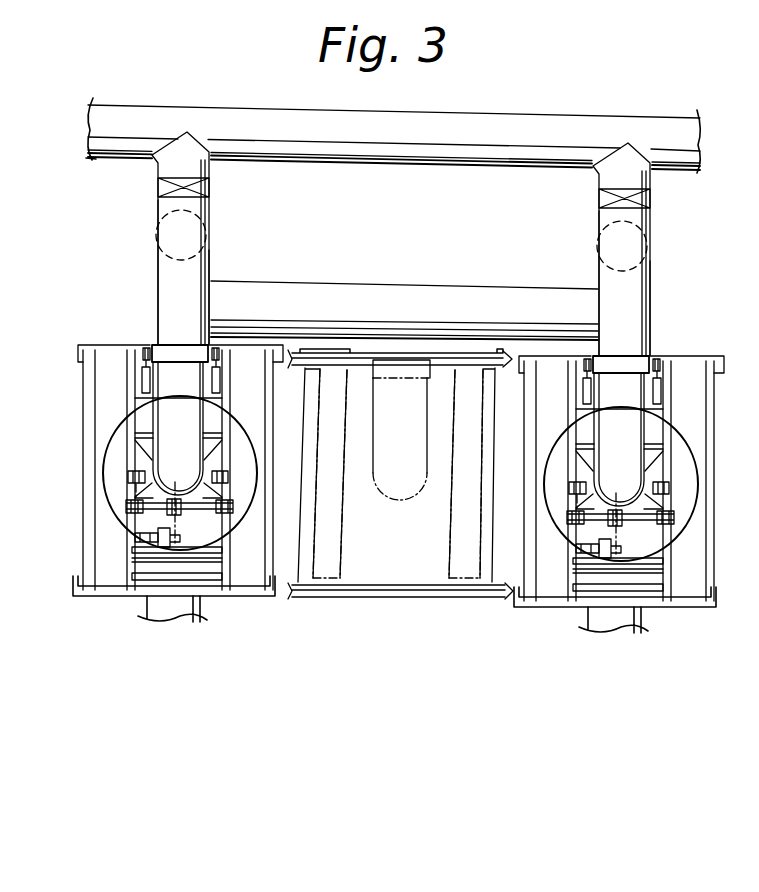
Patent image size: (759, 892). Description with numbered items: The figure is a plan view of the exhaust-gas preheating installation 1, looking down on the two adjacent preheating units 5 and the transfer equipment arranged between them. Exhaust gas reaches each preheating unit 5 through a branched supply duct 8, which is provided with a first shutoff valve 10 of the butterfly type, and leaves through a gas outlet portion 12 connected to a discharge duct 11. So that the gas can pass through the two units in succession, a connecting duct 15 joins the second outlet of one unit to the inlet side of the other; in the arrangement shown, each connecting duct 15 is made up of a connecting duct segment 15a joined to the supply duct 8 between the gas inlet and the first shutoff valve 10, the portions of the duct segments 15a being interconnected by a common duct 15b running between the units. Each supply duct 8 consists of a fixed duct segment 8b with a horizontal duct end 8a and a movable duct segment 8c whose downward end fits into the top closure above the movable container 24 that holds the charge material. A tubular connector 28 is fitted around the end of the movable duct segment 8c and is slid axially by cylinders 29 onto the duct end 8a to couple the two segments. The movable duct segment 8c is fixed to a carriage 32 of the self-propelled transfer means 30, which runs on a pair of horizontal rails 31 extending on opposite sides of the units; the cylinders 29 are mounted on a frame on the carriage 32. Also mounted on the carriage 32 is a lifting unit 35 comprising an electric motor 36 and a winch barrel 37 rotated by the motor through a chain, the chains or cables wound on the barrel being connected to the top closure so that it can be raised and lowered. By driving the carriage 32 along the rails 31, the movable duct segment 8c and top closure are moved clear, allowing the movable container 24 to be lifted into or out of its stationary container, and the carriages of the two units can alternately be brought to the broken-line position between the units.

The sorting apparatus 1 is at (715, 292).
The preheating unit 5 is at (250, 429).
The supply duct 8 is at (211, 270).
The duct end 8a is at (153, 334).
The fixed duct segment 8b is at (157, 285).
The movable duct segment 8c is at (150, 415).
The first shutoff valve 10 is at (211, 187).
The discharge duct 11 is at (147, 617).
The gas outlet portion 12 is at (194, 549).
The connecting duct 15 is at (210, 217).
The connecting duct segment 15a is at (157, 233).
The common duct 15b is at (420, 283).
The movable container 24 is at (248, 463).
The tubular connector 28 is at (186, 345).
The cylinder 29 is at (219, 381).
The transfer means 30 is at (264, 346).
The horizontal rail 31 is at (352, 354).
The carriage 32 is at (389, 353).
The lifting unit 35 is at (203, 515).
The electric motor 36 is at (158, 541).
The winch barrel 37 is at (135, 518).